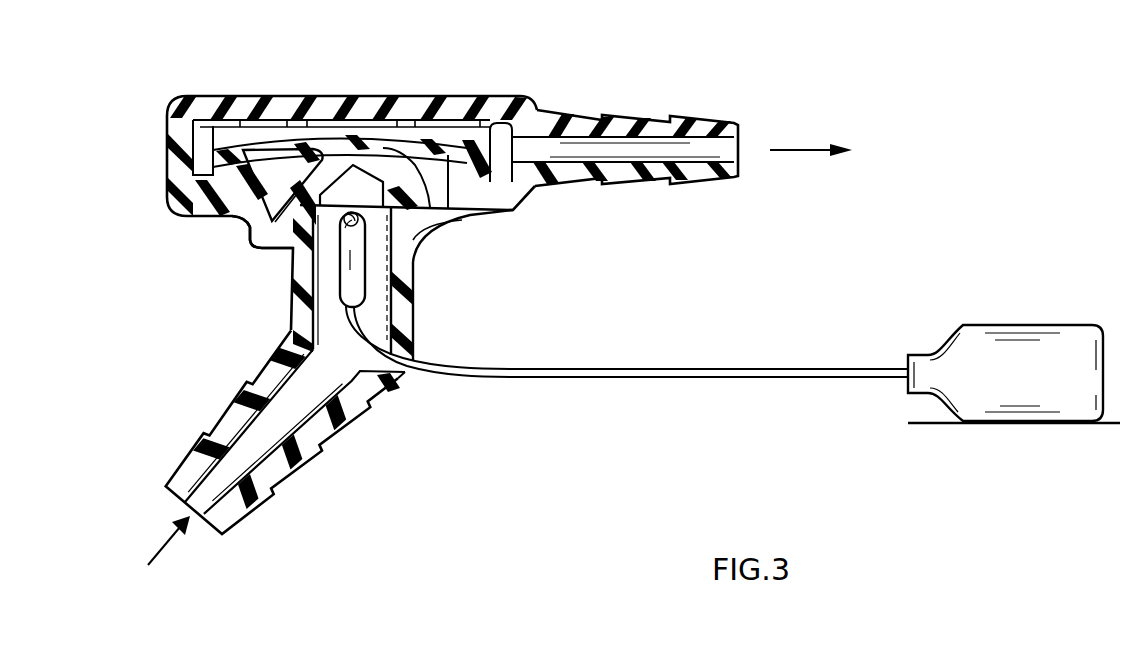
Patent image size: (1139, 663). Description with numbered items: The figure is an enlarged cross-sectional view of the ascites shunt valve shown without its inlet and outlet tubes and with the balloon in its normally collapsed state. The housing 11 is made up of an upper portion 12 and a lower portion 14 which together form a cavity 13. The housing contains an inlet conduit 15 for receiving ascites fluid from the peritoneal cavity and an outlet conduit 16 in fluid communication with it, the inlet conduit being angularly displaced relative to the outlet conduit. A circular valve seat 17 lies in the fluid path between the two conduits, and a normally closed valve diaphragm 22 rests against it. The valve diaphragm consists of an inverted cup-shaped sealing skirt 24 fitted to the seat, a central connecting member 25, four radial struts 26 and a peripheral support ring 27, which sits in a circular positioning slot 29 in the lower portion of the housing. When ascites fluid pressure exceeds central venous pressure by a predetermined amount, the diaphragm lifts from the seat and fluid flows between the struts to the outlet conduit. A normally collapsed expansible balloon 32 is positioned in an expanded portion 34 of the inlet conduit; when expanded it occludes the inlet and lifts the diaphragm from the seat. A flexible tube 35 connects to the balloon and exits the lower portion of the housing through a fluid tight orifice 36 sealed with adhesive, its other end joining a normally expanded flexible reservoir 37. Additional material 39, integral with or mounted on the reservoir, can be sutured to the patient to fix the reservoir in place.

The housing 11 is at (167, 132).
The upper portion 12 is at (465, 96).
The cavity 13 is at (285, 176).
The lower portion 14 is at (250, 246).
The inlet conduit 15 is at (252, 443).
The outlet conduit 16 is at (683, 150).
The circular valve seat 17 is at (445, 229).
The valve diaphragm 22 is at (323, 152).
The sealing skirt 24 is at (457, 203).
The central connecting member 25 is at (300, 190).
The radial struts 26 is at (290, 165).
The peripheral support ring 27 is at (480, 138).
The circular positioning slot 29 is at (238, 222).
The expansible balloon 32 is at (350, 270).
The expanded portion 34 is at (325, 290).
The flexible tube 35 is at (651, 368).
The fluid tight orifice 36 is at (405, 374).
The flexible reservoir 37 is at (963, 357).
The additional material 39 is at (927, 422).